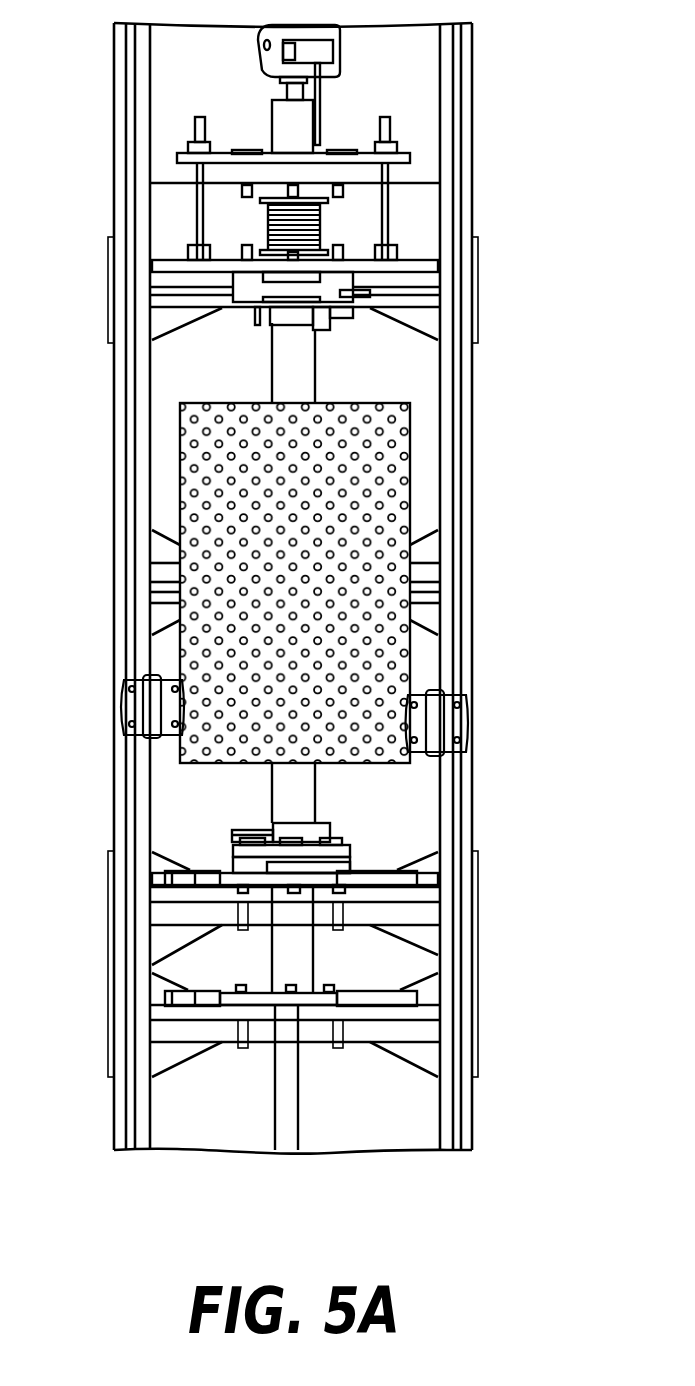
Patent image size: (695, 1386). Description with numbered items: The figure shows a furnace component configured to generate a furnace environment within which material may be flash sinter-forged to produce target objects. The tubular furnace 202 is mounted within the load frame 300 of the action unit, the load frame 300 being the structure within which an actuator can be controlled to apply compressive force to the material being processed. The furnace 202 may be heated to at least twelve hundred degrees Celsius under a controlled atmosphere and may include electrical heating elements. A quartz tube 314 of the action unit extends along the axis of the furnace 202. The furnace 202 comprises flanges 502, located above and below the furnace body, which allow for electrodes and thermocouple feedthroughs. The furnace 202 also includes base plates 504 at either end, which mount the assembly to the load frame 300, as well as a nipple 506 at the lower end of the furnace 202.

The furnace 202 is at (180, 483).
The load frame 300 is at (468, 410).
The quartz tube 314 is at (263, 345).
The flange 502 is at (228, 297).
The base plate 504 is at (402, 268).
The nipple 506 is at (270, 947).